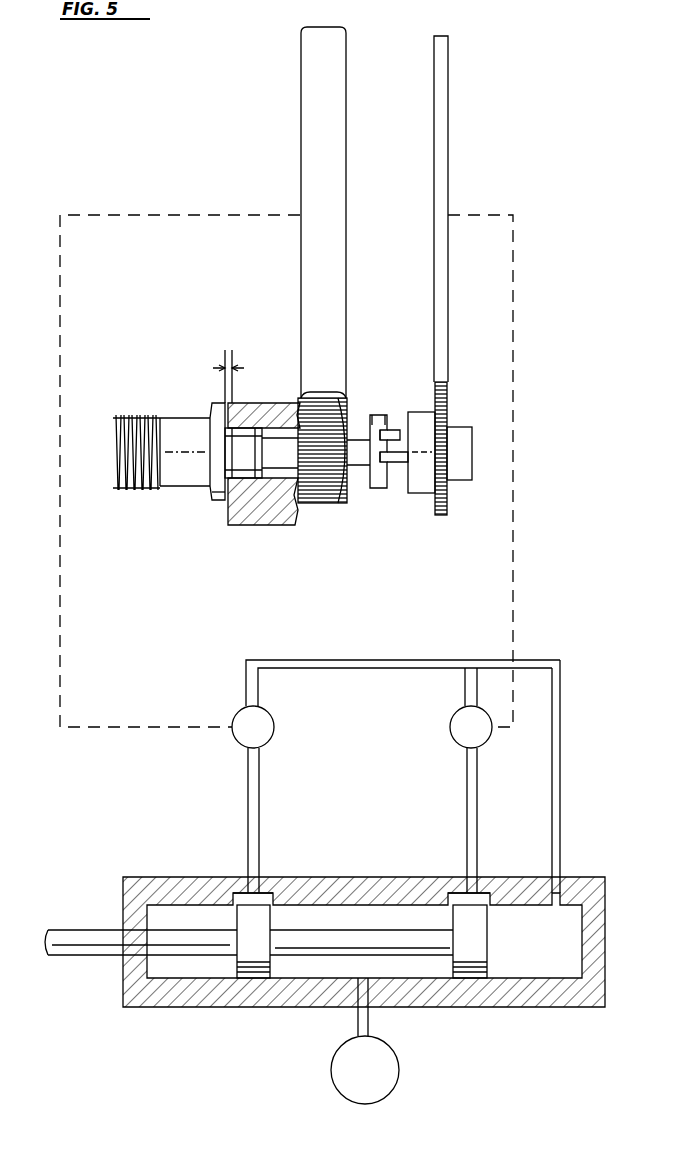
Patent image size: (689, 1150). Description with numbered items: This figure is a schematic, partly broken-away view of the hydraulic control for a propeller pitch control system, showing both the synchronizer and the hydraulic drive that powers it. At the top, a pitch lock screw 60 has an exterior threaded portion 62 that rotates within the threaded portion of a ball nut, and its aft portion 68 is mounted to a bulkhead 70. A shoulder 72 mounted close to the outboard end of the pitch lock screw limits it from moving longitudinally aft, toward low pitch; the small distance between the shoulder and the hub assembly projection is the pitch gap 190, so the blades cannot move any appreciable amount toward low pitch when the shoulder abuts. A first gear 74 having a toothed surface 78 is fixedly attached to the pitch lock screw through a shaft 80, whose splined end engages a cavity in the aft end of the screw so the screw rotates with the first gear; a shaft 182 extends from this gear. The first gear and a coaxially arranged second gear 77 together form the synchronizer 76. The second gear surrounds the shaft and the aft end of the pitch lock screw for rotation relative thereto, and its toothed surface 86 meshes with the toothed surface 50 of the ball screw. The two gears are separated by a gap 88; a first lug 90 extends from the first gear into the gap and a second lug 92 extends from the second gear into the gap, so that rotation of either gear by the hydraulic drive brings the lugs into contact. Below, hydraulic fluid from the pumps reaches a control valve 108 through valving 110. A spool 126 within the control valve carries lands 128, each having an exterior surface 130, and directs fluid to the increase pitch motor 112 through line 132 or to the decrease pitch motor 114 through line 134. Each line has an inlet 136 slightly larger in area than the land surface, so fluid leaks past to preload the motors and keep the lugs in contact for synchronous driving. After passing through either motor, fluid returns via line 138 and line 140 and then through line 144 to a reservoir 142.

The toothed surface 50 is at (300, 110).
The output shaft 182 is at (448, 120).
The pitch lock screw 60 is at (170, 420).
The threaded portion 62 is at (146, 488).
The aft portion 68 is at (252, 454).
The bulkhead 70 is at (258, 518).
The shoulder 72 is at (213, 500).
The first gear 74 is at (446, 498).
The synchronizer 76 is at (375, 530).
The second gear 77 is at (348, 466).
The toothed surface 78 is at (440, 516).
The shaft 80 is at (380, 490).
The toothed surface 86 is at (322, 503).
The gap 88 is at (381, 409).
The first lug 90 is at (390, 460).
The second lug 92 is at (380, 438).
The pitch gap 190 is at (224, 368).
The control valve 108 is at (138, 1041).
The valving 110 is at (380, 1080).
The increase pitch motor 112 is at (266, 737).
The decrease pitch motor 114 is at (484, 737).
The spool 126 is at (497, 944).
The lands 128 is at (266, 930).
The exterior surface 130 is at (250, 965).
The line 132 is at (260, 800).
The line 134 is at (466, 802).
The inlet 136 is at (242, 892).
The line 138 is at (259, 690).
The line 140 is at (465, 688).
The reservoir 142 is at (183, 978).
The line 144 is at (561, 790).